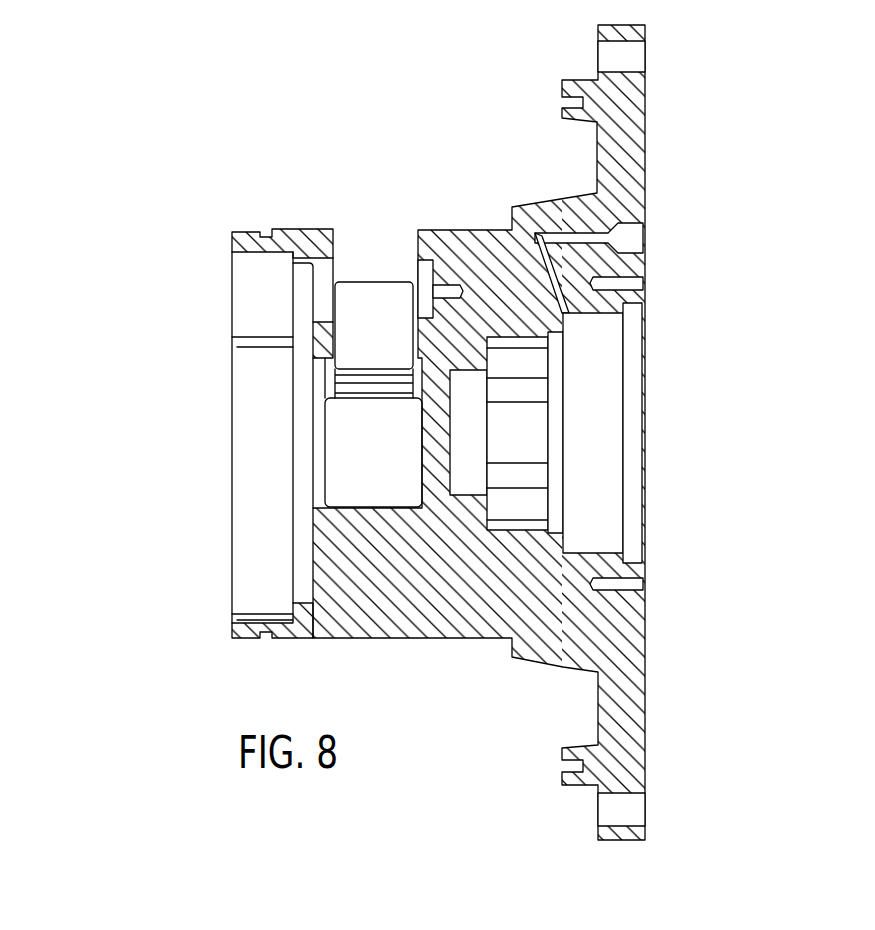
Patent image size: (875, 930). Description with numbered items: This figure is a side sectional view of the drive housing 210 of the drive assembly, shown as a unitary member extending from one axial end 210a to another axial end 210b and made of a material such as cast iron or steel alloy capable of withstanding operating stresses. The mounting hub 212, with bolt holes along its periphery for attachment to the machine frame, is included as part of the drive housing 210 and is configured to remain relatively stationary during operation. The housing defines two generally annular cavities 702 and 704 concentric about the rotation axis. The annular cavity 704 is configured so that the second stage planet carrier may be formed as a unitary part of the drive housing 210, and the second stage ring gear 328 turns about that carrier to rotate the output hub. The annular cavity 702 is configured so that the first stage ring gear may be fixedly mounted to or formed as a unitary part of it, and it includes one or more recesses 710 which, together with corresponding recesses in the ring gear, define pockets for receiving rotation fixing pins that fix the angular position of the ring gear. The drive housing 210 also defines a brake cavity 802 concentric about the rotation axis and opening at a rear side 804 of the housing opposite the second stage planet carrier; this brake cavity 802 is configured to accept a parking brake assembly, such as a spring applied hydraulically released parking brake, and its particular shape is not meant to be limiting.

The drive housing 210 is at (745, 88).
The axial end 210a is at (683, 307).
The axial end 210b is at (172, 306).
The mounting hub 212 is at (632, 810).
The second stage ring gear 328 is at (410, 266).
The annular cavity 702 is at (262, 553).
The annular cavity 704 is at (362, 298).
The recesses 710 is at (260, 347).
The brake cavity 802 is at (592, 432).
The rear side 804 is at (645, 690).